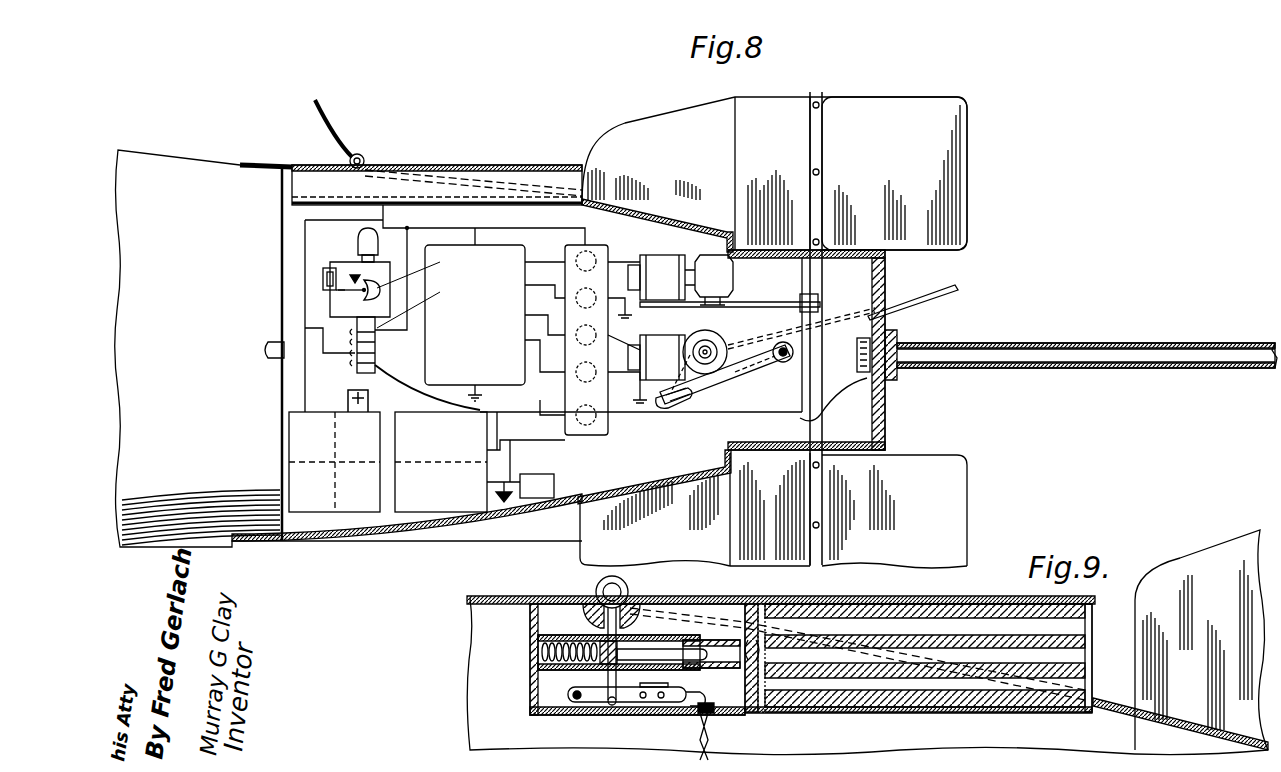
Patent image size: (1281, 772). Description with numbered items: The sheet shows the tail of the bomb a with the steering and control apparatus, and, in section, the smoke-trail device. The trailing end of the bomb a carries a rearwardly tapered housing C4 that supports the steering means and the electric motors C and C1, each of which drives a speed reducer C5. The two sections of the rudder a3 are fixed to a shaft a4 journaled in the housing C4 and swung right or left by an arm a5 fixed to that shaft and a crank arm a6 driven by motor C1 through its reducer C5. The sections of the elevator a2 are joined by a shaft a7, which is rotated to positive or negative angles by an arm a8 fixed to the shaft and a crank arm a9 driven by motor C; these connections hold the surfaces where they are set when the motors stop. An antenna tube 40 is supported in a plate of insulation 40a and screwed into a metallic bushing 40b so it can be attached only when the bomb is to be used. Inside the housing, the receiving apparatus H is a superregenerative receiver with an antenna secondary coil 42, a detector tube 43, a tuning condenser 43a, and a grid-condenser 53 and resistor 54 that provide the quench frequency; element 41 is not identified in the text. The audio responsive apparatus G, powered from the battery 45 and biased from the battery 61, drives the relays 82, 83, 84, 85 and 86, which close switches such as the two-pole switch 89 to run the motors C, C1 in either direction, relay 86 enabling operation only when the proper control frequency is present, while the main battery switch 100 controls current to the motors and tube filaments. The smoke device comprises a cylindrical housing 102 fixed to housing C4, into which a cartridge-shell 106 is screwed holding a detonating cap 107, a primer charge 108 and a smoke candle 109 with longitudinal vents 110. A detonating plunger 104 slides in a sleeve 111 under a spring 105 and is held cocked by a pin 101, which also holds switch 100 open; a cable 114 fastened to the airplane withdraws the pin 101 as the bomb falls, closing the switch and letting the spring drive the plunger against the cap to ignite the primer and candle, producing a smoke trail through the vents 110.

In FIG. 8, the bomb a is at (348, 348).
In FIG. 8, the elevator a2 is at (962, 286).
In FIG. 8, the rudder a3 is at (857, 173).
In FIG. 9, the rudder a3 is at (1200, 555).
In FIG. 8, the shaft a4 is at (838, 290).
In FIG. 8, the arm a5 is at (770, 305).
In FIG. 8, the crank arm a6 is at (690, 265).
In FIG. 8, the shaft a7 is at (790, 330).
In FIG. 8, the arm a8 is at (750, 370).
In FIG. 8, the crank arm a9 is at (700, 322).
In FIG. 8, the electric motor C is at (656, 357).
In FIG. 8, the electric motor C1 is at (655, 250).
In FIG. 8, the housing C4 is at (372, 538).
In FIG. 9, the housing C4 is at (504, 587).
In FIG. 8, the speed reducer C5 is at (726, 340).
In FIG. 8, the audio responsive apparatus G is at (475, 323).
In FIG. 8, the receiving apparatus H is at (351, 291).
In FIG. 8, the tube 40 is at (1143, 368).
In FIG. 8, the plate of insulation 40a is at (885, 290).
In FIG. 8, the metallic bushing 40b is at (897, 338).
In FIG. 8, the coil 41 is at (380, 362).
In FIG. 8, the antenna secondary coil 42 is at (416, 305).
In FIG. 8, the superregenerative detector tube 43 is at (356, 248).
In FIG. 8, the tuning condenser 43a is at (420, 268).
In FIG. 8, the battery 45 is at (480, 462).
In FIG. 8, the grid-condenser 53 is at (323, 278).
In FIG. 8, the resistor 54 is at (327, 287).
In FIG. 8, the battery 61 is at (554, 480).
In FIG. 8, the relay 82 is at (582, 340).
In FIG. 8, the relay 83 is at (578, 301).
In FIG. 8, the relay 84 is at (582, 332).
In FIG. 8, the relay 85 is at (586, 371).
In FIG. 8, the relay 86 is at (568, 412).
In FIG. 8, the two-pole switch 89 is at (322, 404).
In FIG. 9, the main battery switch 100 is at (640, 707).
In FIG. 8, the pin 101 is at (370, 156).
In FIG. 9, the pin 101 is at (596, 592).
In FIG. 8, the cylindrical housing 102 is at (414, 172).
In FIG. 9, the cylindrical housing 102 is at (725, 603).
In FIG. 9, the detonating plunger 104 is at (655, 650).
In FIG. 9, the spring 105 is at (538, 654).
In FIG. 8, the cartridge-shell 106 is at (522, 170).
In FIG. 9, the cartridge-shell 106 is at (982, 603).
In FIG. 9, the detonating cap 107 is at (752, 715).
In FIG. 9, the primer charge 108 is at (800, 712).
In FIG. 9, the smoke pellet or candle 109 is at (916, 603).
In FIG. 9, the longitudinal vents 110 is at (845, 625).
In FIG. 9, the sleeve 111 is at (542, 680).
In FIG. 8, the cable 114 is at (338, 133).